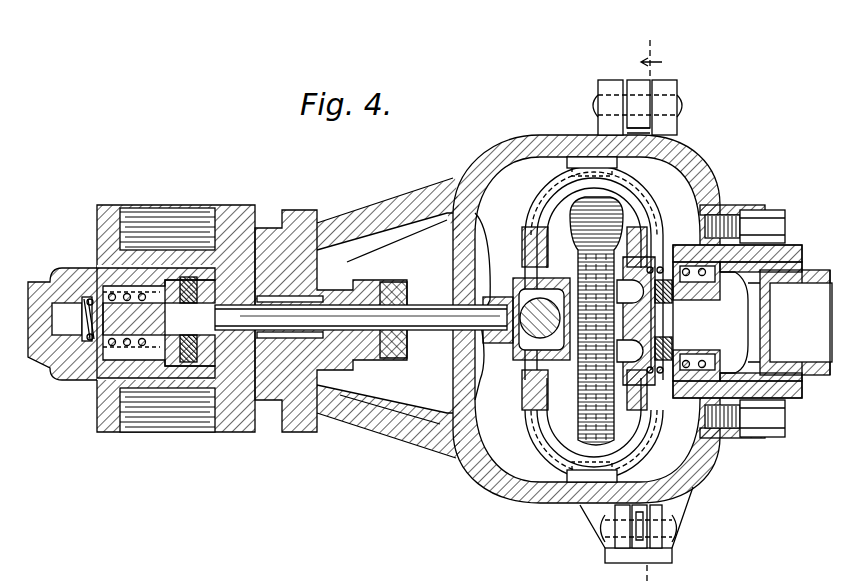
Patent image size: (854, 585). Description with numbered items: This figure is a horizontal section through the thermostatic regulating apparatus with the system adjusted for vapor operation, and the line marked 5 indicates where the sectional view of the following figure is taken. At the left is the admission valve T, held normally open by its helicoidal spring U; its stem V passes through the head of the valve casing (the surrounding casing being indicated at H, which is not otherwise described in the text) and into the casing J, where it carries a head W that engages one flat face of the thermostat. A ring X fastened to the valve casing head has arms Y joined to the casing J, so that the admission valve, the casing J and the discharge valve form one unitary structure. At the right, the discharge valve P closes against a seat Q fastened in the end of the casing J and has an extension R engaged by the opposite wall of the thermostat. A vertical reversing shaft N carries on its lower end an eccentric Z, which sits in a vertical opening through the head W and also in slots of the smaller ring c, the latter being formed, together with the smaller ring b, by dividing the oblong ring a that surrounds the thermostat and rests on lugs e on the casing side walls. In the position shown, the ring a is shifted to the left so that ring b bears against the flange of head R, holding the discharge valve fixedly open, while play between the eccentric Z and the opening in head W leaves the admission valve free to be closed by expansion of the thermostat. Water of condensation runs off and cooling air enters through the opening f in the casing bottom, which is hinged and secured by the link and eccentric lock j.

The valve casing H is at (141, 318).
The helicoidal spring U is at (137, 297).
The admission valve T is at (187, 281).
The stem V is at (427, 316).
The ring X is at (302, 425).
The arms Y is at (390, 420).
The casing J is at (551, 291).
The oblong ring a is at (627, 198).
The smaller ring b is at (645, 242).
The smaller ring c is at (522, 273).
The head W is at (517, 302).
The eccentric Z is at (523, 360).
The vertical shaft N is at (488, 318).
The lugs e is at (588, 160).
The opening f is at (608, 360).
The extension R is at (596, 321).
The discharge valve P is at (670, 325).
The seat Q is at (707, 307).
The link and eccentric lock j is at (640, 530).
The section line 5 is at (651, 302).